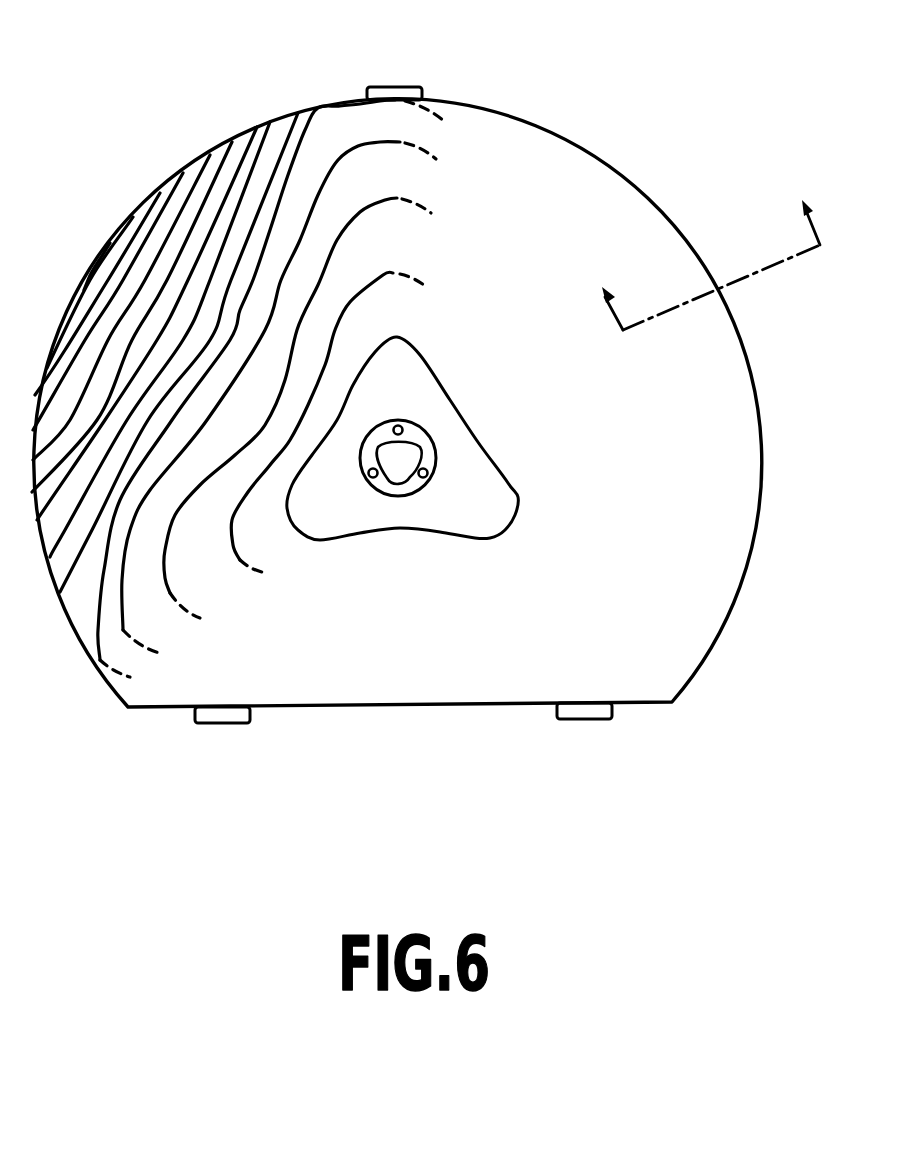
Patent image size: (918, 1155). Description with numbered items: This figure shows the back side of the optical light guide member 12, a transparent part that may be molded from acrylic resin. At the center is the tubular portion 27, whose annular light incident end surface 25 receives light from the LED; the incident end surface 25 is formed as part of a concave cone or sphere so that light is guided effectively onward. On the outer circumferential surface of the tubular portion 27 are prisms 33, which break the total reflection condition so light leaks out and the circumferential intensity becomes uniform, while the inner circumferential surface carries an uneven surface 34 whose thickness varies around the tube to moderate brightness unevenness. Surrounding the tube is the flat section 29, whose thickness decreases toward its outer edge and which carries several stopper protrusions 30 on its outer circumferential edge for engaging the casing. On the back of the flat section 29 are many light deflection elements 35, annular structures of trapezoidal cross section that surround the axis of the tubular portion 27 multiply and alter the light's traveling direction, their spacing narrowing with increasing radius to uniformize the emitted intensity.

The optical light guide member 12 is at (678, 162).
The light incident end surface 25 is at (444, 446).
The tubular portion 27 is at (401, 496).
The flat section 29 is at (740, 448).
The stopper protrusions 30 is at (393, 87).
The prisms 33 is at (398, 425).
The uneven surface 34 is at (372, 460).
The light deflection elements 35 is at (290, 131).